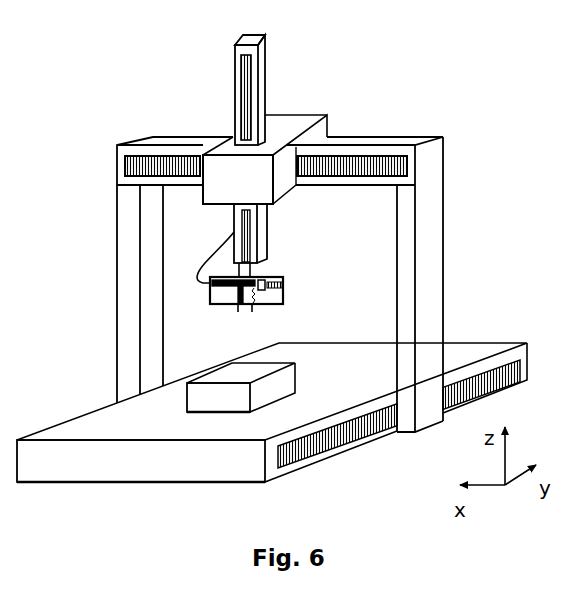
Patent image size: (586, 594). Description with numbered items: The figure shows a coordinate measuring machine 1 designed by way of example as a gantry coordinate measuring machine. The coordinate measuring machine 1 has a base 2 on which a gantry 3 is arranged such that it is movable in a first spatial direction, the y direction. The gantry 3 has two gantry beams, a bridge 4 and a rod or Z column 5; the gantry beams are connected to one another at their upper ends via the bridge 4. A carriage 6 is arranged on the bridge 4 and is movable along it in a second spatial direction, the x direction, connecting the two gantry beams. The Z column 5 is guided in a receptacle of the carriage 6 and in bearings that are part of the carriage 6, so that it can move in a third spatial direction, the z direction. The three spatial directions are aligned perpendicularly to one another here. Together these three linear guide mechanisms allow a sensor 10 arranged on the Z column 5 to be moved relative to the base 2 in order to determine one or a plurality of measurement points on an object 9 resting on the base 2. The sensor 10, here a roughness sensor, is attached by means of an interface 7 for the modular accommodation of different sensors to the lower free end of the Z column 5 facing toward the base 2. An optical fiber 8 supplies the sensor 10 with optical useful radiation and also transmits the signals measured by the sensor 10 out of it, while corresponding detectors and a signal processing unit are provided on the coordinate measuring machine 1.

The coordinate measuring machine 1 is at (100, 89).
The base 2 is at (90, 427).
The gantry 3 is at (316, 284).
The bridge 4 is at (284, 142).
The Z column 5 is at (268, 233).
The carriage 6 is at (272, 119).
The interface 7 is at (286, 260).
The optical fiber 8 is at (220, 248).
The object 9 is at (241, 375).
The sensor 10 is at (287, 300).